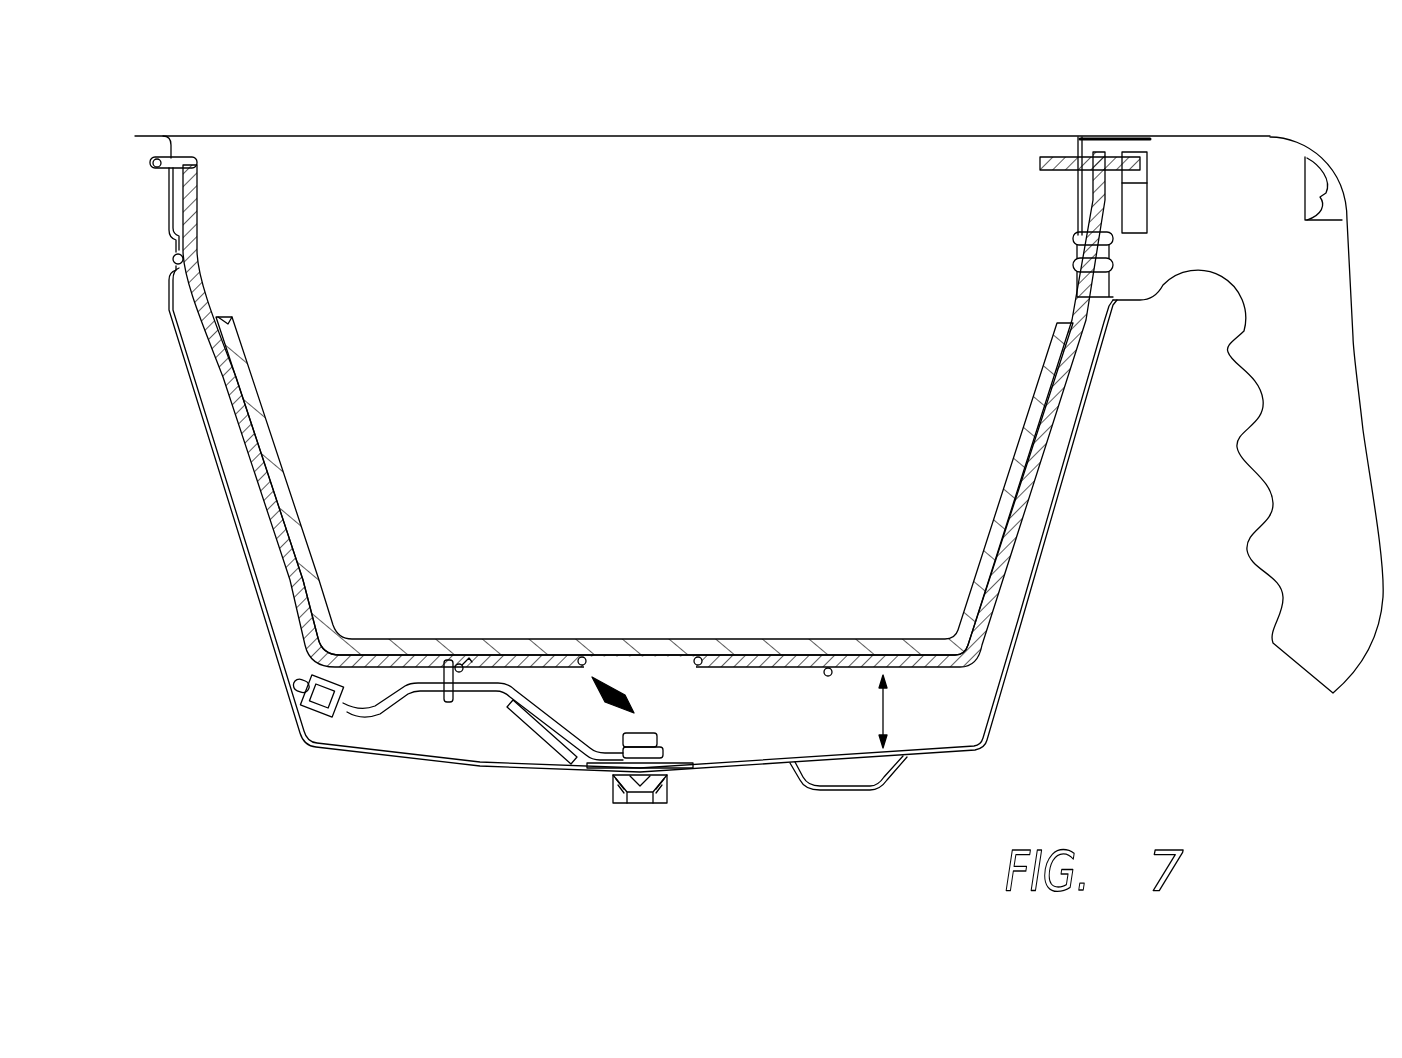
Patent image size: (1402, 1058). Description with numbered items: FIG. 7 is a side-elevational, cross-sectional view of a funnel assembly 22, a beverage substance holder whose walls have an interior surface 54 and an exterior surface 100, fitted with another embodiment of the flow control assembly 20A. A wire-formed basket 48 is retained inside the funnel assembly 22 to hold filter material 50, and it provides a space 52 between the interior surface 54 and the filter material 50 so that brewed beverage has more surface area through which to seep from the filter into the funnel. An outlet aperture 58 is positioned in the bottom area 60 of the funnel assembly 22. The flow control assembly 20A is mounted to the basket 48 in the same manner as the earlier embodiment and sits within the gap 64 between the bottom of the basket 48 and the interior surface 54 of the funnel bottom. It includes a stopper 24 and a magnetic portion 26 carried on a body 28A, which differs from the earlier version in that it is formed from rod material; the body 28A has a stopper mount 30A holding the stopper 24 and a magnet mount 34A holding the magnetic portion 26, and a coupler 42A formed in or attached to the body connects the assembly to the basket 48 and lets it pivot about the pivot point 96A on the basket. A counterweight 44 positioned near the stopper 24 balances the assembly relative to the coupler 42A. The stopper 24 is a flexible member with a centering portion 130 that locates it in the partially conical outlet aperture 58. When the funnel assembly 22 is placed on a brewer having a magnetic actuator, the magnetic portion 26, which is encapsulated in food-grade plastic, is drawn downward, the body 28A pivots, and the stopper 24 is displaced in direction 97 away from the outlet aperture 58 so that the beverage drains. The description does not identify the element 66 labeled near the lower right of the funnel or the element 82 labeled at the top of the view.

The flow control assembly 20A is at (480, 750).
The funnel assembly 22 is at (125, 360).
The stopper 24 is at (690, 757).
The magnetic portion 26 is at (333, 705).
The body 28A is at (437, 720).
The stopper mount 30A is at (653, 745).
The magnet mount 34A is at (305, 690).
The coupler 42A is at (440, 671).
The counterweight 44 is at (555, 745).
The basket 48 is at (1047, 410).
The filter material 50 is at (1037, 400).
The space 52 is at (1088, 365).
The interior surface 54 is at (1058, 490).
The outlet aperture 58 is at (640, 800).
The bottom area 60 is at (777, 790).
The gap 64 is at (885, 708).
The handle 66 is at (932, 670).
The lid 82 is at (293, 183).
The pivot point 96A is at (462, 664).
The displacement 97 is at (642, 735).
The exterior surface 100 is at (933, 753).
The centering portion 130 is at (613, 783).